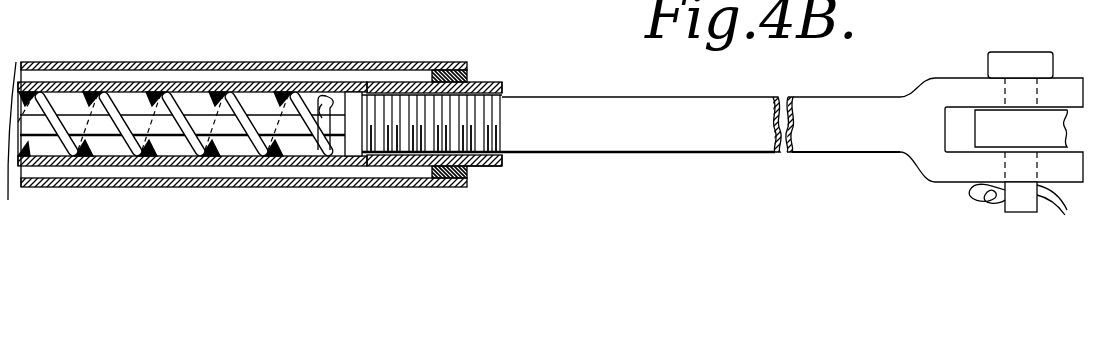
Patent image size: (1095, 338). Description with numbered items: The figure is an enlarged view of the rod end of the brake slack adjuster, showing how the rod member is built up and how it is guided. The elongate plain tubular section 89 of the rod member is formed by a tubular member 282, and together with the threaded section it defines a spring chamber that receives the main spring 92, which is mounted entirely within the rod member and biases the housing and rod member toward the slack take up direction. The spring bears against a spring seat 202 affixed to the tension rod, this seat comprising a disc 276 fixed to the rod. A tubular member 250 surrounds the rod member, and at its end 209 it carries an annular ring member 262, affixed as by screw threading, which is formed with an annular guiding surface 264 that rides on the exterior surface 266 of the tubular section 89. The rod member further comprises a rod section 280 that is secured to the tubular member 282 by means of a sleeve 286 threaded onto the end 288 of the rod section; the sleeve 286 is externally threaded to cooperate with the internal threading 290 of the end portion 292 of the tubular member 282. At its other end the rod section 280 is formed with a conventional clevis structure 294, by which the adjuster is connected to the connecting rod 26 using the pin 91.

The connecting rod 26 is at (993, 123).
The plain tubular section 89 is at (182, 88).
The pin 91 is at (1013, 60).
The main spring 92 is at (113, 115).
The spring seat 202 is at (392, 65).
The end of tubular member 209 is at (460, 72).
The tubular member 250 is at (360, 83).
The annular ring member 262 is at (483, 83).
The annular guiding surface 264 is at (500, 85).
The exterior surface 266 is at (490, 172).
The disc 276 is at (338, 162).
The rod section 280 is at (660, 107).
The tubular member 282 is at (328, 44).
The sleeve 286 is at (503, 155).
The end of rod section 288 is at (433, 128).
The internal threading 290 is at (385, 167).
The end portion 292 is at (473, 178).
The clevis structure 294 is at (955, 83).